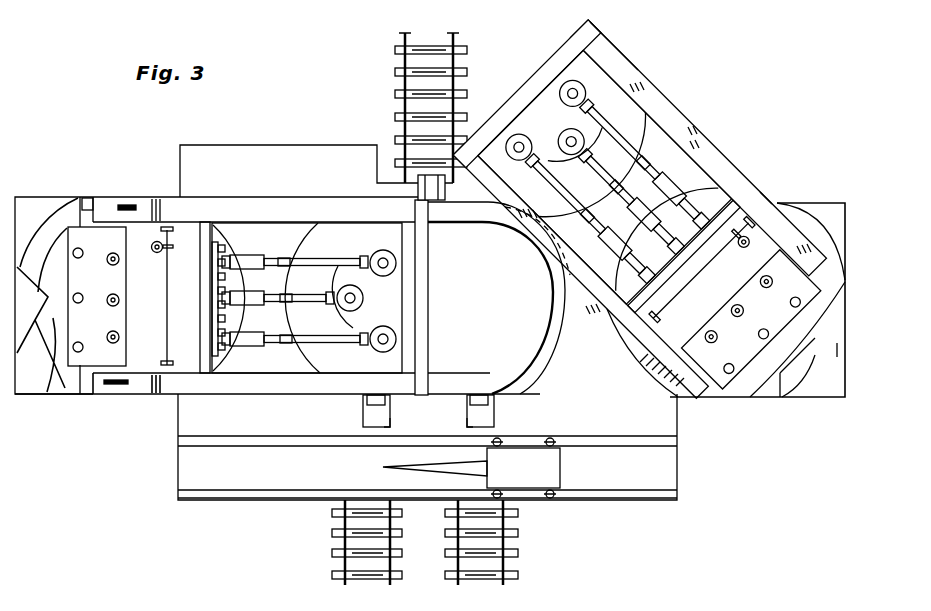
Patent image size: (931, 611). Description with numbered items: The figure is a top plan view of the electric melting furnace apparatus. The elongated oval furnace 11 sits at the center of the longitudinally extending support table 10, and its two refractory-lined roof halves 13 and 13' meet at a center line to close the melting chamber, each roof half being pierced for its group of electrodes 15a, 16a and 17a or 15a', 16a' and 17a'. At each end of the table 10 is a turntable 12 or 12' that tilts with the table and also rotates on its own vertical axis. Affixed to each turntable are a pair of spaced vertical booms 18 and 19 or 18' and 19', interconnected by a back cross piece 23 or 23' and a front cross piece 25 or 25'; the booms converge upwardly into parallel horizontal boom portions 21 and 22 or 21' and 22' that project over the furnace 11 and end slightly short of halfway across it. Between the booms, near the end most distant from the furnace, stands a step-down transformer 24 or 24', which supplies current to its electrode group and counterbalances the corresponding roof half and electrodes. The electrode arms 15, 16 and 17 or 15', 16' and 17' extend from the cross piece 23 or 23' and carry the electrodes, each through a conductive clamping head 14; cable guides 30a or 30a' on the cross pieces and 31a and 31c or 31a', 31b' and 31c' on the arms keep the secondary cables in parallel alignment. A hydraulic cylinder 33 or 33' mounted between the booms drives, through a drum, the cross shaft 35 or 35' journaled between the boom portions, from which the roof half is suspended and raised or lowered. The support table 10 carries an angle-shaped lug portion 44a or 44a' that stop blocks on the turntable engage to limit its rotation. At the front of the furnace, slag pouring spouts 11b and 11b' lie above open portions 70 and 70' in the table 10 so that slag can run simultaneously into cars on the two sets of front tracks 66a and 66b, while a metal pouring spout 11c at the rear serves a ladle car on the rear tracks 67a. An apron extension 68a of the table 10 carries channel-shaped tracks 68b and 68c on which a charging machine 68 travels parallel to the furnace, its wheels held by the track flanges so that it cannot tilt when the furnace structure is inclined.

The support table 10 is at (258, 148).
The melting furnace 11 is at (483, 315).
The slag pouring spout 11b is at (506, 411).
The slag pouring spout 11b' is at (355, 411).
The metal pouring spout 11c is at (418, 197).
The turntable 12 is at (757, 284).
The turntable 12' is at (54, 282).
The roof half 13 is at (605, 160).
The roof half 13' is at (307, 273).
The electrode support or clamping head 14 is at (617, 58).
The electrode arm 15 is at (593, 222).
The electrode arm 15' is at (291, 326).
The electrode 15a is at (505, 128).
The electrode 15a' is at (368, 351).
The electrode arm 16 is at (634, 199).
The electrode arm 16' is at (274, 286).
The electrode 16a is at (564, 138).
The electrode 16a' is at (368, 297).
The electrode arm 17 is at (648, 165).
The electrode arm 17' is at (291, 246).
The electrode 17a is at (555, 78).
The electrode 17a' is at (368, 249).
The vertical support post or boom 18 is at (635, 353).
The vertical support post or boom 18' is at (97, 409).
The vertical support post or boom 19 is at (782, 171).
The vertical support post or boom 19' is at (118, 181).
The horizontal arm or boom portion 21 is at (580, 270).
The horizontal arm or boom portion 21' is at (277, 399).
The horizontal arm or boom portion 22 is at (698, 148).
The horizontal arm or boom portion 22' is at (260, 197).
The back cross piece 23 is at (695, 228).
The back cross piece 23' is at (209, 273).
The step-down electric transformer 24 is at (751, 340).
The step-down electric transformer 24' is at (97, 269).
The front cross piece 25 is at (527, 94).
The front cross piece 25' is at (444, 297).
The cable guide 30a is at (207, 600).
The cable guide 30a' is at (653, 600).
The cable guide 31a is at (532, 241).
The cable guide 31a' is at (274, 355).
The cable guide 31b' is at (269, 312).
The cable guide 31c is at (713, 128).
The cable guide 31c' is at (260, 245).
The motor or hydraulic cylinder 33 is at (737, 257).
The motor or hydraulic cylinder 33' is at (153, 260).
The cross shaft 35 is at (702, 269).
The cross shaft 35' is at (156, 296).
The angle-shaped lug portion 44a is at (797, 315).
The angle-shaped lug portion 44a' is at (45, 311).
The front tracks 66a is at (370, 585).
The front tracks 66b is at (486, 581).
The rear tracks 67a is at (398, 50).
The charging machine or self-powered crane 68 is at (562, 470).
The apron extension 68a is at (190, 463).
The channel-shaped track 68b is at (190, 495).
The channel-shaped track 68c is at (187, 438).
The open portion of the table 70 is at (455, 414).
The open portion of the table 70' is at (407, 423).